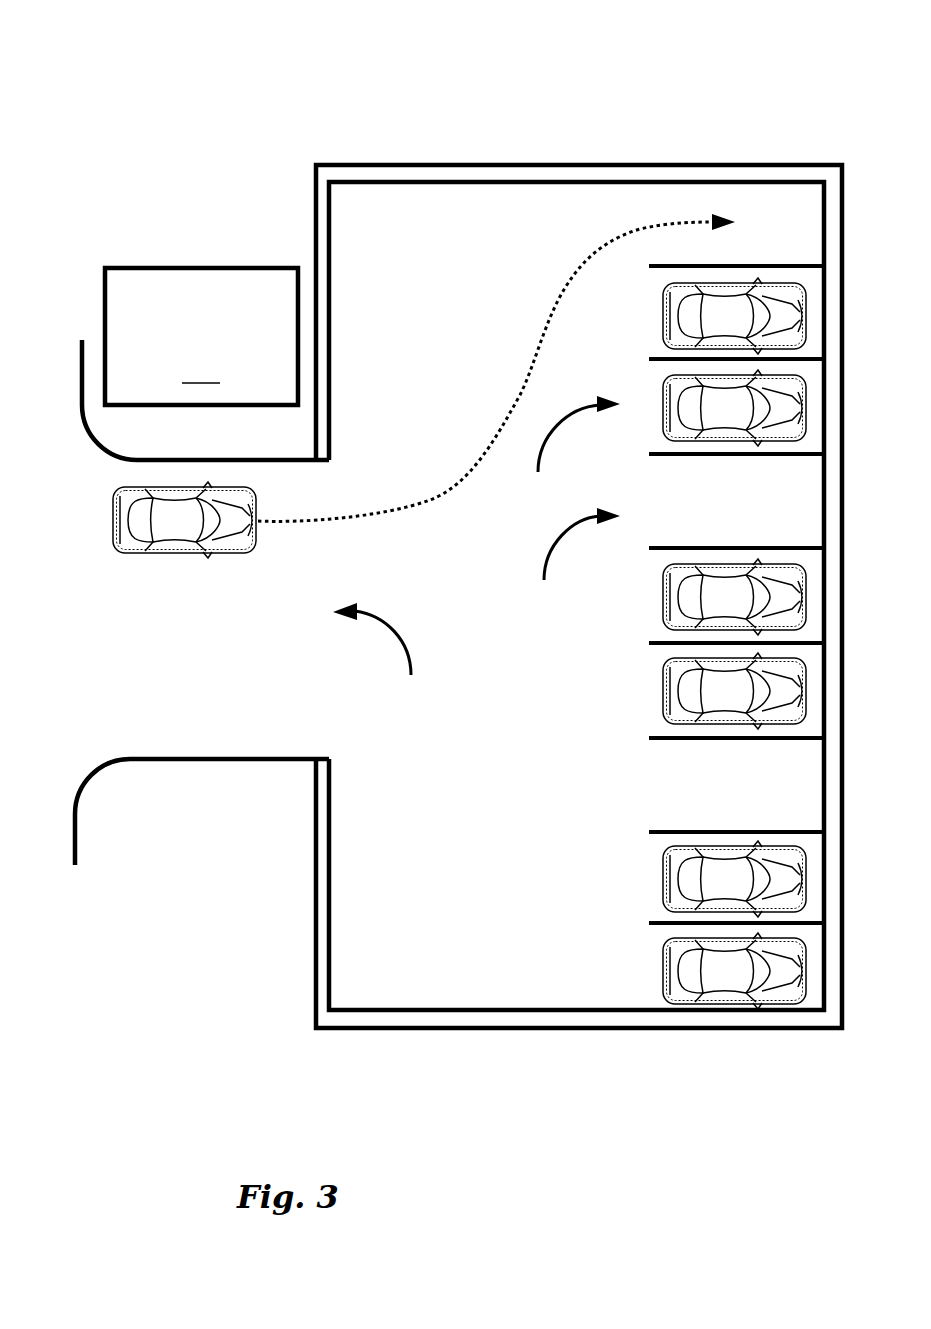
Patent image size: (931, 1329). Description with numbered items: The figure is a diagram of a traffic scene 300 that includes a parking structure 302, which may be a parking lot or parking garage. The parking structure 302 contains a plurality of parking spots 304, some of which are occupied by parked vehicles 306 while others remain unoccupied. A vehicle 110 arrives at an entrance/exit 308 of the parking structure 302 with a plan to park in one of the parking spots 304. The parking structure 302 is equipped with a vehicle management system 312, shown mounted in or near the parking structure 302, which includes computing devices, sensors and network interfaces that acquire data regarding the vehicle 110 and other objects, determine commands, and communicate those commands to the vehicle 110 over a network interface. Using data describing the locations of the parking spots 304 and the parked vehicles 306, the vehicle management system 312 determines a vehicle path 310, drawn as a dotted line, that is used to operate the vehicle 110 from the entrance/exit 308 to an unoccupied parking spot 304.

The traffic scene 300 is at (303, 28).
The parking structure 302 is at (524, 163).
The parking spot 304 is at (675, 559).
The parked vehicle 306 is at (673, 448).
The entrance/exit 308 is at (381, 654).
The vehicle path 310 is at (540, 345).
The vehicle management system 312 is at (201, 336).
The vehicle 110 is at (112, 521).